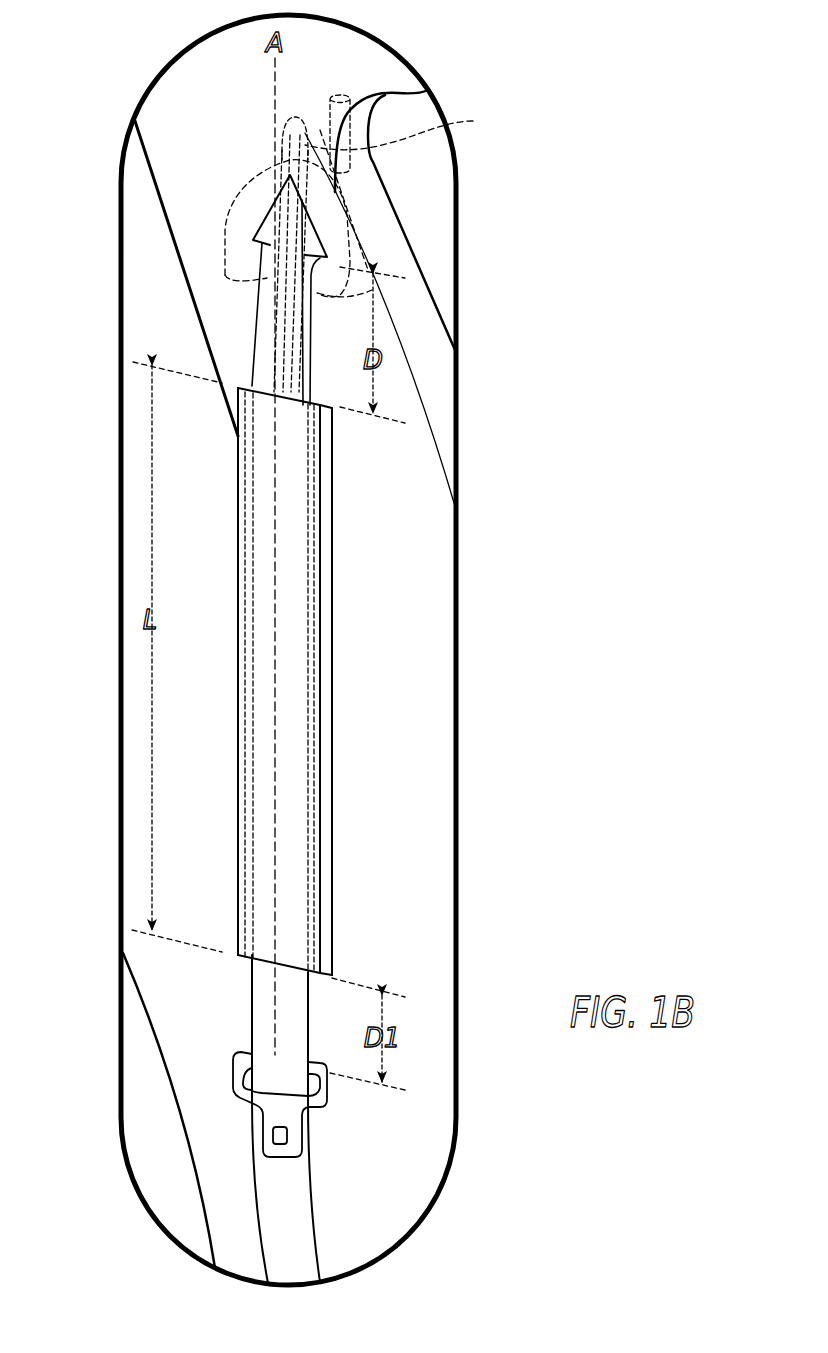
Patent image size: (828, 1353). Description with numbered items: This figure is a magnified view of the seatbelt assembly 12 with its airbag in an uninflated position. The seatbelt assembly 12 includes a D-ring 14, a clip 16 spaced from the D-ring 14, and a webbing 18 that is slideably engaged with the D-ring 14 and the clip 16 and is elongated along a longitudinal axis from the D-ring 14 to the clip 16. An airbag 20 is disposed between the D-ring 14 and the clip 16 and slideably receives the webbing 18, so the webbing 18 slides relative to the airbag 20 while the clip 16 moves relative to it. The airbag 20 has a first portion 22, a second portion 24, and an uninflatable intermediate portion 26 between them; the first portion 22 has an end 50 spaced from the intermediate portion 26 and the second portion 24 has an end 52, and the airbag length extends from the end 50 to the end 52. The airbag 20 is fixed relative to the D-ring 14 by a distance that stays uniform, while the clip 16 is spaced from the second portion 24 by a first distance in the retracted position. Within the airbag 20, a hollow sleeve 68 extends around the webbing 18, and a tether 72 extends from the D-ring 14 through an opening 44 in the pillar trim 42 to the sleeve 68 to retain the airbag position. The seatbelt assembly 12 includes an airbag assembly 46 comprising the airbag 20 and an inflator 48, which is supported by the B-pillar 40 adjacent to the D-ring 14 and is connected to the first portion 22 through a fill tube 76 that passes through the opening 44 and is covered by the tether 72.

The seatbelt assembly 12 is at (157, 332).
The D-ring 14 is at (247, 187).
The clip 16 is at (330, 1097).
The webbing 18 is at (308, 1010).
The airbag 20 is at (340, 445).
The first portion 22 is at (337, 653).
The second portion 24 is at (337, 852).
The intermediate portion 26 is at (337, 758).
The B-pillar 40 is at (403, 222).
The pillar trim 42 is at (324, 363).
The opening 44 is at (260, 233).
The airbag assembly 46 is at (200, 150).
The inflator 48 is at (340, 95).
The end 50 is at (245, 387).
The end 52 is at (238, 960).
The sleeve 68 is at (313, 535).
The tether 72 is at (260, 310).
The fill tube 76 is at (403, 127).